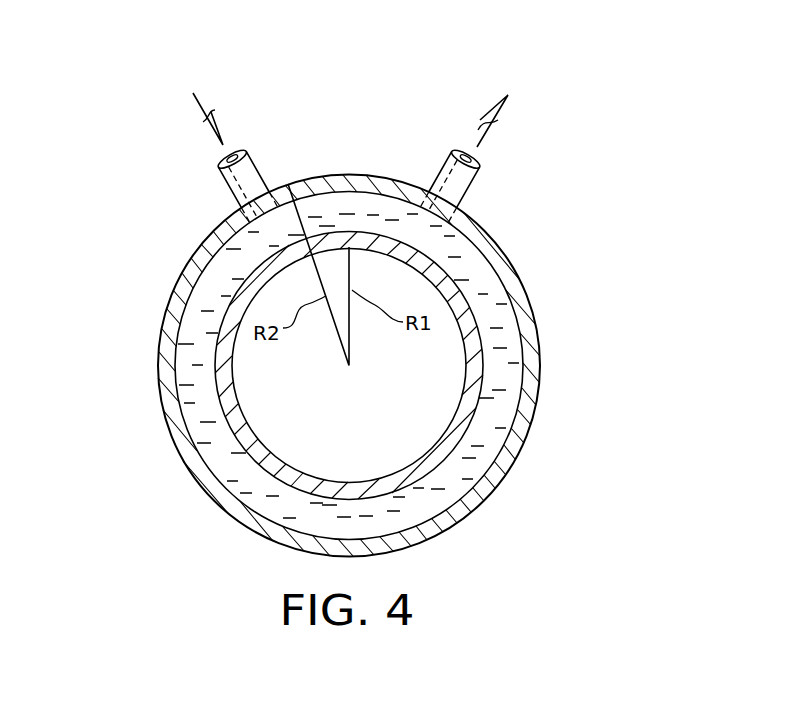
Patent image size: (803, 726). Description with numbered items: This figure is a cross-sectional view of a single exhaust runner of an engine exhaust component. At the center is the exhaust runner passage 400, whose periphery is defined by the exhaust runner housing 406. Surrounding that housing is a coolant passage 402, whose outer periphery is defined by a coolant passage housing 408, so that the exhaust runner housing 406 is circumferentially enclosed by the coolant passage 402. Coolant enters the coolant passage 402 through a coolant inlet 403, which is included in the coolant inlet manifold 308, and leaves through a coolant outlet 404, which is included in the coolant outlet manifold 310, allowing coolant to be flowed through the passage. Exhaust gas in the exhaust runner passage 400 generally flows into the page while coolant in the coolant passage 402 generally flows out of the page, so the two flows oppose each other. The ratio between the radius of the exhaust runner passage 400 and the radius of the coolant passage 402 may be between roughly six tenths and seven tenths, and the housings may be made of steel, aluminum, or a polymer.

The exhaust runner passage 400 is at (330, 424).
The coolant passage 402 is at (230, 247).
The coolant inlet 403 is at (245, 172).
The coolant outlet 404 is at (463, 177).
The exhaust runner housing 406 is at (228, 332).
The coolant passage housing 408 is at (165, 398).
The coolant inlet manifold 308 is at (169, 86).
The coolant outlet manifold 310 is at (529, 87).